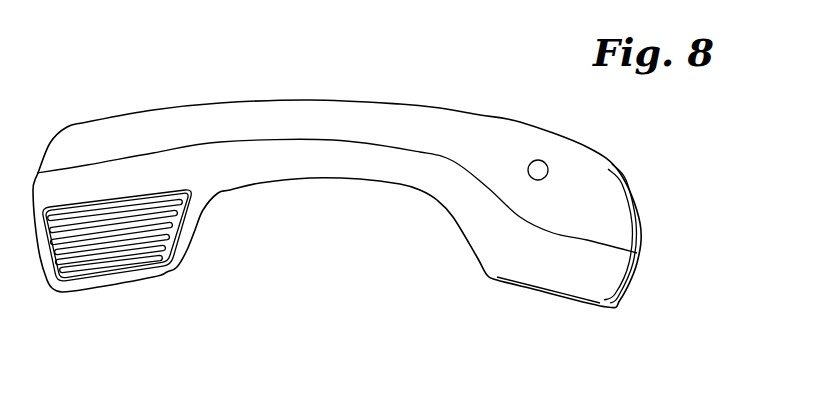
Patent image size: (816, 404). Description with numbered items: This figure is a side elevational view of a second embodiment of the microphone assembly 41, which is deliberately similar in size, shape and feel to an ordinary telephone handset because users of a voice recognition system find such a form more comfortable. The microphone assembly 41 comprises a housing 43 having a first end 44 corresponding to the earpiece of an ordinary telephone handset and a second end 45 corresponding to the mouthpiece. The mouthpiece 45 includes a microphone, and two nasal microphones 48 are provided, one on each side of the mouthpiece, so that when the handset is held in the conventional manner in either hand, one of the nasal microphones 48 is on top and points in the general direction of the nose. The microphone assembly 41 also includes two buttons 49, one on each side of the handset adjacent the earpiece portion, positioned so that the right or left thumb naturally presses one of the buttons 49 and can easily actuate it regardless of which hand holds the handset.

The microphone assembly 41 is at (375, 78).
The housing 43 is at (283, 113).
The first end 44 is at (612, 295).
The second end 45 is at (193, 235).
The nasal microphone 48 is at (83, 250).
The button 49 is at (546, 164).